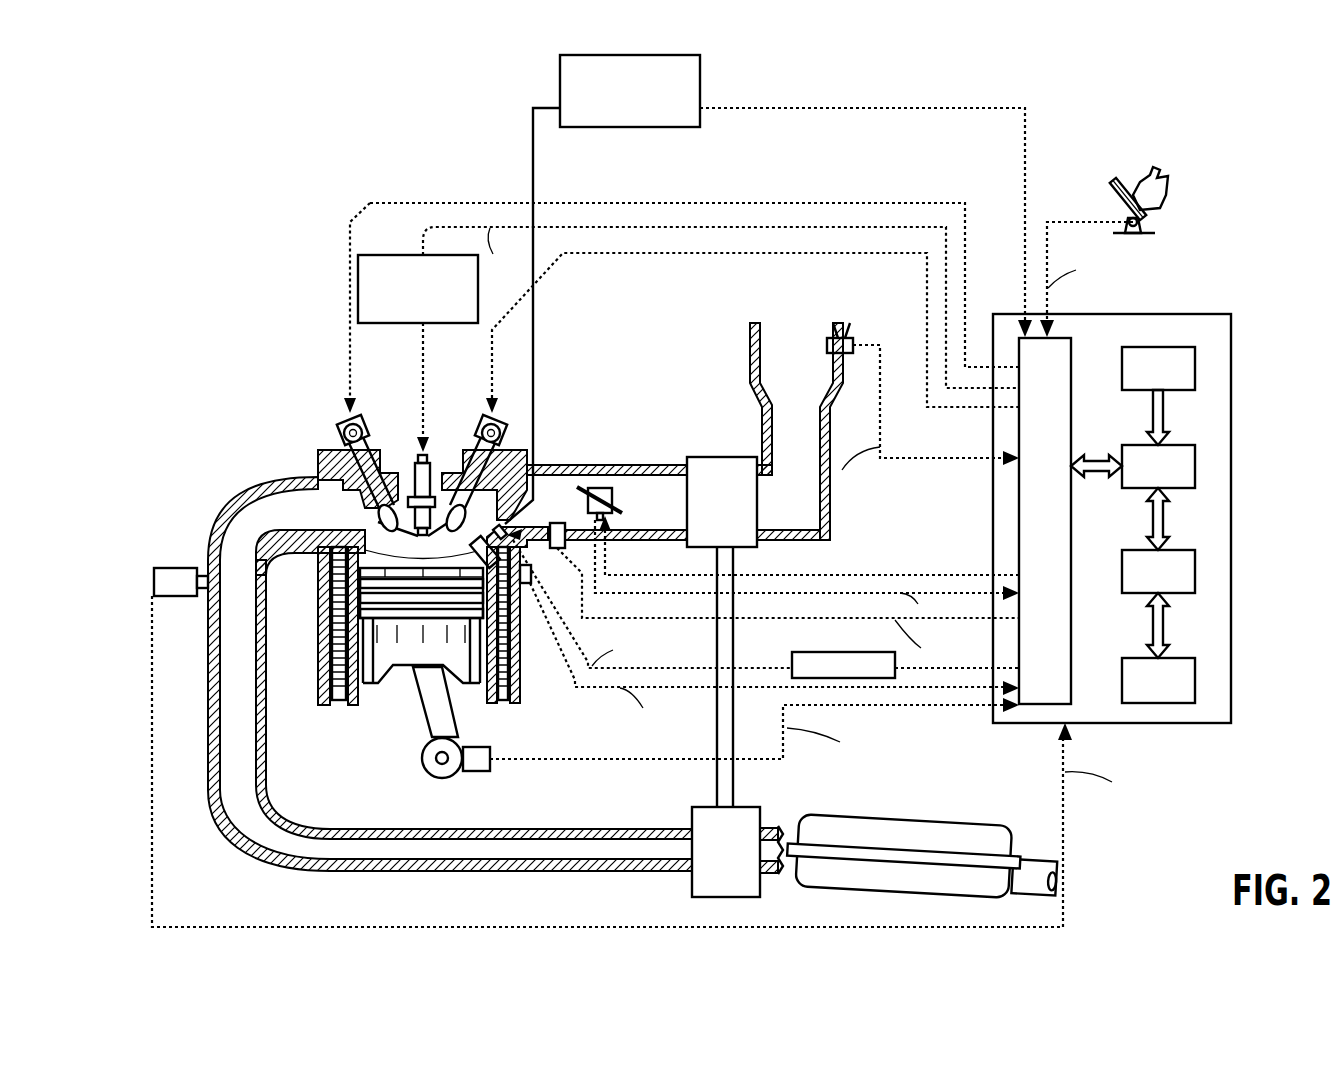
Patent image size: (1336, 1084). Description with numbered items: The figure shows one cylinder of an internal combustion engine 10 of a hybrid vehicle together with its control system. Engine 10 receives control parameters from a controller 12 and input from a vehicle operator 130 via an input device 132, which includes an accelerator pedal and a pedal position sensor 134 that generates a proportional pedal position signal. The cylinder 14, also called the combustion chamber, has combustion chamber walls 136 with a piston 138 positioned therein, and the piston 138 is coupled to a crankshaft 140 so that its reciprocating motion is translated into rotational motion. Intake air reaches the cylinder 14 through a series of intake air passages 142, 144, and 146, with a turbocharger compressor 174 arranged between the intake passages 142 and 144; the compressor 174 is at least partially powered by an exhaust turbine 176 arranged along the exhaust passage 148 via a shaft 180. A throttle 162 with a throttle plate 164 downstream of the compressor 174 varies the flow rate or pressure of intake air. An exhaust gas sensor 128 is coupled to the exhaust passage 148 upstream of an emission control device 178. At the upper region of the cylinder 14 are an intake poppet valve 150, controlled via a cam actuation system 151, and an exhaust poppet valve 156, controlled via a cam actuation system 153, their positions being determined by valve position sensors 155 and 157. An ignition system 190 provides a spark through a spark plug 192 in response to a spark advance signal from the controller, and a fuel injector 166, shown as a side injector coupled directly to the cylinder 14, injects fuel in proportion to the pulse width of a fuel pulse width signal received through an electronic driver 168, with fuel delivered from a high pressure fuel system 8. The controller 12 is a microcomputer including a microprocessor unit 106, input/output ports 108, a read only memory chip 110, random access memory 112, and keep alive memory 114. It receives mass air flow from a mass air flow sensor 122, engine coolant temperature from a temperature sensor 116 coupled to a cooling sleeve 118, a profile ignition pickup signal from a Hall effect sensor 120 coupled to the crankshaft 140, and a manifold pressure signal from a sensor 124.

The internal combustion engine 10 is at (145, 140).
The high pressure fuel system 8 is at (700, 72).
The controller 12 is at (1153, 504).
The cylinder 14 is at (323, 567).
The microprocessor unit 106 is at (1197, 462).
The input/output ports 108 is at (1072, 347).
The read only memory chip 110 is at (1197, 367).
The random access memory 112 is at (1197, 573).
The keep alive memory 114 is at (1197, 680).
The temperature sensor 116 is at (528, 585).
The cooling sleeve 118 is at (518, 700).
The Hall effect sensor 120 is at (478, 772).
The mass air flow sensor 122 is at (847, 338).
The manifold pressure sensor 124 is at (567, 565).
The exhaust gas sensor 128 is at (154, 570).
The vehicle operator 130 is at (1168, 182).
The input device 132 is at (1115, 193).
The pedal position sensor 134 is at (1148, 222).
The combustion chamber walls 136 is at (360, 700).
The piston 138 is at (405, 650).
The crankshaft 140 is at (432, 778).
The intake air passage 142 is at (812, 374).
The intake air passage 144 is at (672, 514).
The intake air passage 146 is at (571, 514).
The exhaust passage 148 is at (302, 524).
The intake poppet valve 150 is at (458, 520).
The cam actuation system 151 is at (488, 422).
The cam actuation system 153 is at (356, 422).
The valve position sensor 155 is at (505, 432).
The exhaust poppet valve 156 is at (378, 520).
The valve position sensor 157 is at (338, 432).
The throttle 162 is at (602, 488).
The throttle plate 164 is at (578, 488).
The fuel injector 166 is at (744, 588).
The electronic driver 168 is at (800, 652).
The compressor 174 is at (708, 457).
The exhaust turbine 176 is at (690, 883).
The emission control device 178 is at (970, 824).
The shaft 180 is at (725, 767).
The ignition system 190 is at (378, 255).
The spark plug 192 is at (416, 470).